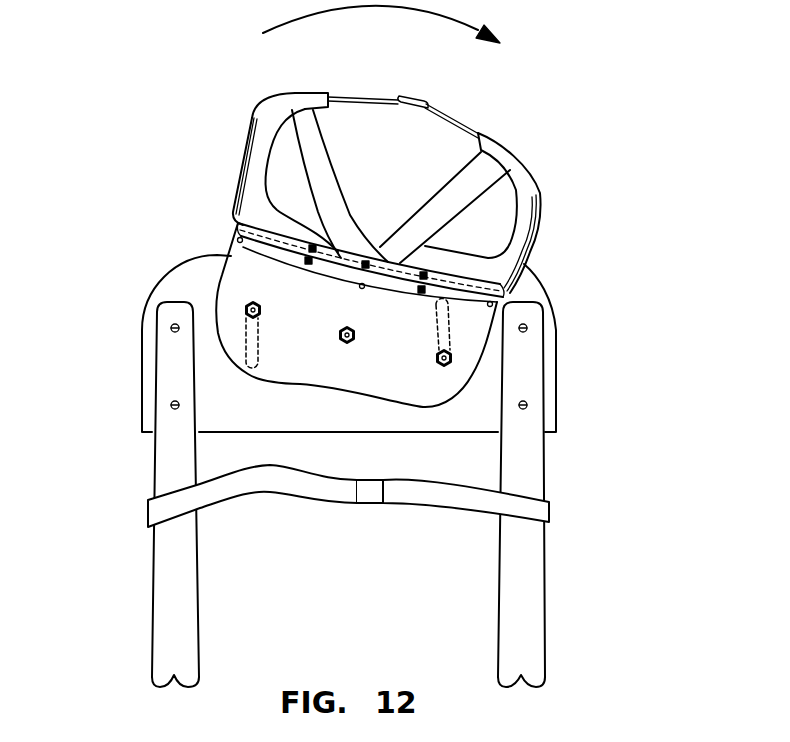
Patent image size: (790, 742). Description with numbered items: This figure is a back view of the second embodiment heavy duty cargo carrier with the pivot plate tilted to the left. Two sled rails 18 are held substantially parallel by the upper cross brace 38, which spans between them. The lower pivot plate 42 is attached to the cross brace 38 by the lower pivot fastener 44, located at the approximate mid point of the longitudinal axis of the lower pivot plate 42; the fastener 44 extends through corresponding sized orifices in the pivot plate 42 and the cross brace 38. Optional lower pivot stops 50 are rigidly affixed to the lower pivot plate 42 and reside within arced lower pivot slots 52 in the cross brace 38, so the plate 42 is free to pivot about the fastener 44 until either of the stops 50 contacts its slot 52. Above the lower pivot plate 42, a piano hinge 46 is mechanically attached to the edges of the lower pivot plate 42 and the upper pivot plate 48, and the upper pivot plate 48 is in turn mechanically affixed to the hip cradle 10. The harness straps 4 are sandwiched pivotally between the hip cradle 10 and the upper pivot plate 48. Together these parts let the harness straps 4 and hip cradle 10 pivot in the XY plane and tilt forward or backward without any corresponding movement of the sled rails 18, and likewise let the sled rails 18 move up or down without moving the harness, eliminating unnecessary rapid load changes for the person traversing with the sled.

The harness straps 4 is at (457, 200).
The hip cradle 10 is at (520, 151).
The sled rails 18 is at (532, 608).
The upper cross brace 38 is at (548, 294).
The lower pivot plate 42 is at (243, 262).
The lower pivot fastener 44 is at (340, 337).
The piano hinge 46 is at (527, 245).
The upper pivot plate 48 is at (253, 230).
The lower pivot stops 50 is at (451, 360).
The lower pivot slots 52 is at (249, 367).